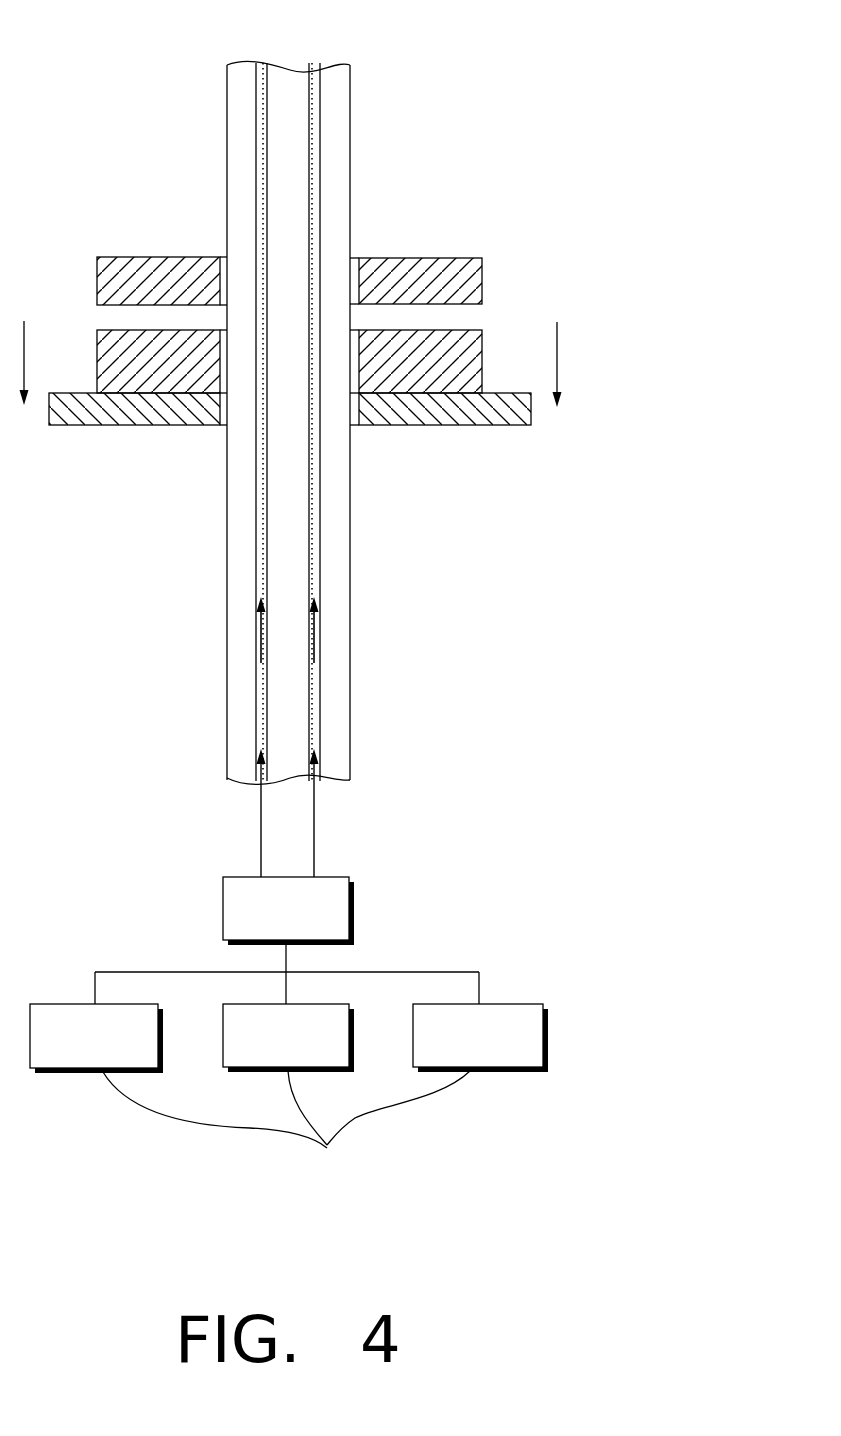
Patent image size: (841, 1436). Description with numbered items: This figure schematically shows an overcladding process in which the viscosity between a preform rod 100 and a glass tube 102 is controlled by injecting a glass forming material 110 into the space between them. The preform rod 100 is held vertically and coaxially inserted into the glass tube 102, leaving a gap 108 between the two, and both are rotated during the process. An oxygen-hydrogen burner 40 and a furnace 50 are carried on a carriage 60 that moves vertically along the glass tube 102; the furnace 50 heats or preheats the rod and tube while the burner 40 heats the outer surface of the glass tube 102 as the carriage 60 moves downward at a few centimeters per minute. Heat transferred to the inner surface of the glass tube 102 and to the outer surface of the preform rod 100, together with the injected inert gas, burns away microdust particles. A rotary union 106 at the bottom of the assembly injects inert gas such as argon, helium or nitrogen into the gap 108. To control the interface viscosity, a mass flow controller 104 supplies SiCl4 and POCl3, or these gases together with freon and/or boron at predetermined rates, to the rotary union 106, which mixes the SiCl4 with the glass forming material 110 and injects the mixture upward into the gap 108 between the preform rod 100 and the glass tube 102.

The preform rod 100 is at (293, 73).
The glass tube 102 is at (345, 598).
The gap 108 is at (313, 170).
The glass forming material 110 is at (263, 548).
The oxygen-hydrogen burner 40 is at (477, 280).
The furnace 50 is at (478, 362).
The carriage 60 is at (505, 425).
The rotary union 106 is at (352, 905).
The mass flow controller 104 is at (327, 1148).